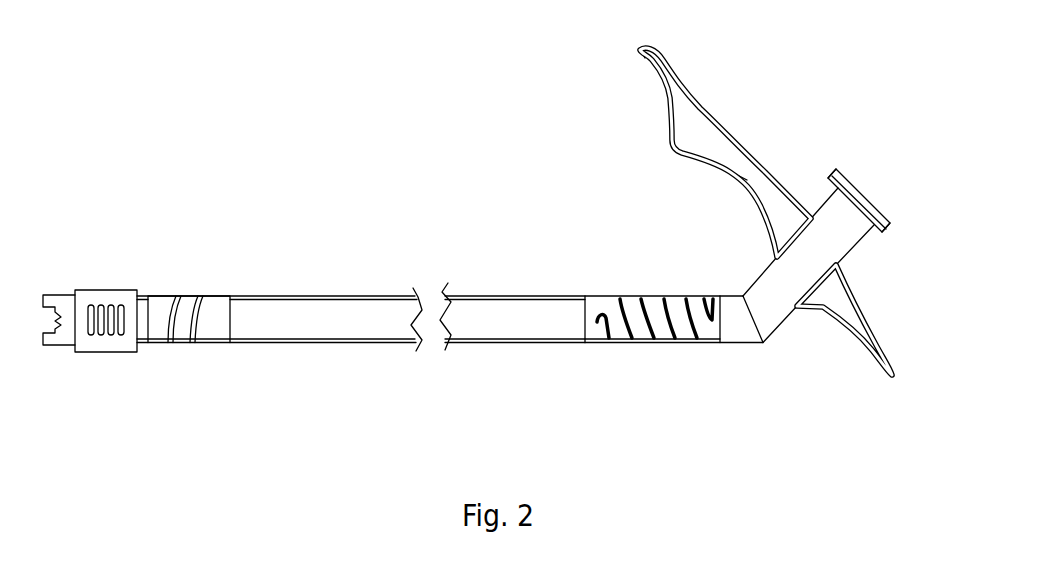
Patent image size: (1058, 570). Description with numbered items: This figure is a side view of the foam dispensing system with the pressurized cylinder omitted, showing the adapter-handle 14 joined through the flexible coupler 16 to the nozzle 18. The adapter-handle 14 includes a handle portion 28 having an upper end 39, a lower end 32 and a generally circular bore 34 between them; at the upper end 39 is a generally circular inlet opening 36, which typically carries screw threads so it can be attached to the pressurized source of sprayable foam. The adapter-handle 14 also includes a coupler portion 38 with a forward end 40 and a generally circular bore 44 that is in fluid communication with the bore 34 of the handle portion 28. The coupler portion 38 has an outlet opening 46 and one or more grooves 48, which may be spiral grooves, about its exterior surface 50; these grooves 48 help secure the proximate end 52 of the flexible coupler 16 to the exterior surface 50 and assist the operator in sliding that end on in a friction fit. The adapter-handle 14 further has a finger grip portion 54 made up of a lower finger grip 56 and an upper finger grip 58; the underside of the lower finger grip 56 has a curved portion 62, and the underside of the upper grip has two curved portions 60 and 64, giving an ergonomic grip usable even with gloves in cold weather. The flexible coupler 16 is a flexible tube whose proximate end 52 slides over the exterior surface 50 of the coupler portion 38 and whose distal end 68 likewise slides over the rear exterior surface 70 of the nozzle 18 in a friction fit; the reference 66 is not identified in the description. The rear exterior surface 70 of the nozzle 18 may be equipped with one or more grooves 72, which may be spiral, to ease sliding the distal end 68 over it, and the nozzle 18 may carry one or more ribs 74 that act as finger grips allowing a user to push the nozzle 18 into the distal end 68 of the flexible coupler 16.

The adapter-handle 14 is at (783, 356).
The flexible coupler 16 is at (325, 295).
The nozzle 18 is at (118, 290).
The handle portion 28 is at (858, 243).
The lower end 32 is at (762, 344).
The generally circular bore 34 is at (866, 188).
The inlet opening 36 is at (840, 170).
The coupler portion 38 is at (640, 341).
The upper end 39 is at (889, 229).
The forward end 40 is at (743, 294).
The generally circular bore 44 is at (585, 315).
The outlet opening 46 is at (577, 341).
The grooves 48 is at (622, 298).
The exterior surface 50 is at (728, 343).
The proximate end 52 is at (607, 341).
The finger grip portion 54 is at (737, 133).
The lower finger grip 56 is at (894, 350).
The upper finger grip 58 is at (668, 60).
The curved portion 60 is at (662, 93).
The curved portion 62 is at (850, 328).
The curved portion 64 is at (720, 174).
The tube bottom wall 66 is at (366, 344).
The distal end 68 is at (200, 343).
The rear exterior surface 70 is at (187, 307).
The grooves 72 is at (169, 343).
The ribs 74 is at (100, 336).